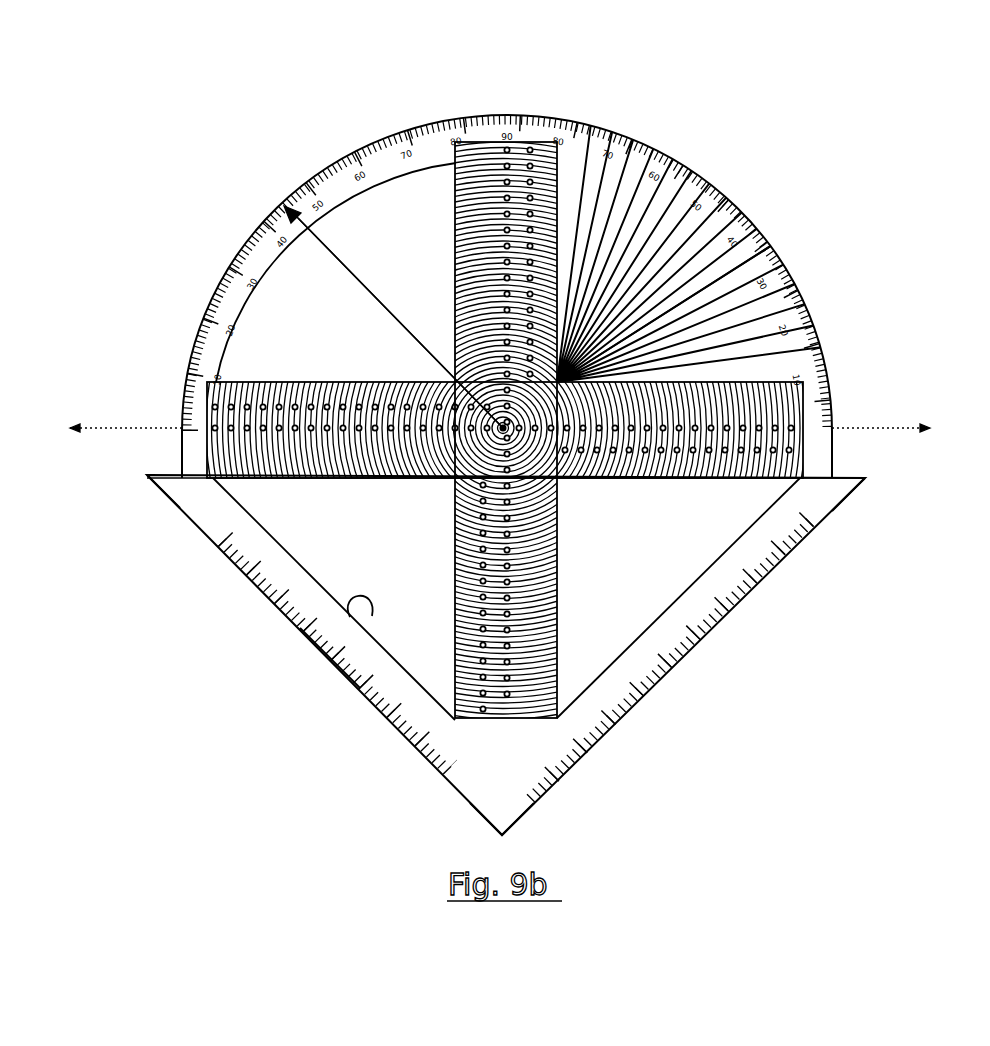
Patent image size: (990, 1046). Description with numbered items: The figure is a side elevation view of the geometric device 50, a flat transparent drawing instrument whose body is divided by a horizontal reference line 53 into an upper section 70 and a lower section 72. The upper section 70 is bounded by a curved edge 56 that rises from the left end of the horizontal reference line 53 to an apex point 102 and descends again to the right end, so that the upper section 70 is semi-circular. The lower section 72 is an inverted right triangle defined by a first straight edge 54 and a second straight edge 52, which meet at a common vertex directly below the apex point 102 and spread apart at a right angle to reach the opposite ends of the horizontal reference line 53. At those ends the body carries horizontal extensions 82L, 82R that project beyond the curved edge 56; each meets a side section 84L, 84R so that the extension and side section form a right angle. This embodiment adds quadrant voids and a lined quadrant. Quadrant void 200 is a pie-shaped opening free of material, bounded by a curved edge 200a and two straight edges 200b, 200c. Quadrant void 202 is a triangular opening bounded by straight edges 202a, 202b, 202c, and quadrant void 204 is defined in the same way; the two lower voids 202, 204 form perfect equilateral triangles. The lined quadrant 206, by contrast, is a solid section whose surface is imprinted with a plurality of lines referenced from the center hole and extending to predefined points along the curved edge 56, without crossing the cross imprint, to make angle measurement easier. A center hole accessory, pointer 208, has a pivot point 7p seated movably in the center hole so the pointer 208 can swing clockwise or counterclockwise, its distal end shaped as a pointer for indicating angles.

The geometric device 50 is at (785, 151).
The curved edge 56 is at (233, 252).
The apex point 102 is at (505, 114).
The side section 84L is at (181, 446).
The side section 84R is at (834, 450).
The horizontal reference line 53 is at (112, 428).
The quadrant void 200 is at (353, 245).
The curved edge 200a is at (267, 380).
The straight edge 200b is at (232, 360).
The straight edge 200c is at (456, 204).
The upper section 70 is at (637, 140).
The lined quadrant 206 is at (723, 267).
The pointer 208 is at (377, 297).
The quadrant void 202 is at (214, 600).
The straight edge 202a is at (330, 658).
The straight edge 202b is at (297, 522).
The straight edge 202c is at (455, 640).
The quadrant void 204 is at (653, 540).
The first straight edge 54 is at (297, 637).
The second straight edge 52 is at (683, 660).
The lower section 72 is at (445, 758).
The horizontal extension 82L is at (146, 473).
The horizontal extension 82R is at (866, 470).
The pivot point 7p is at (456, 483).